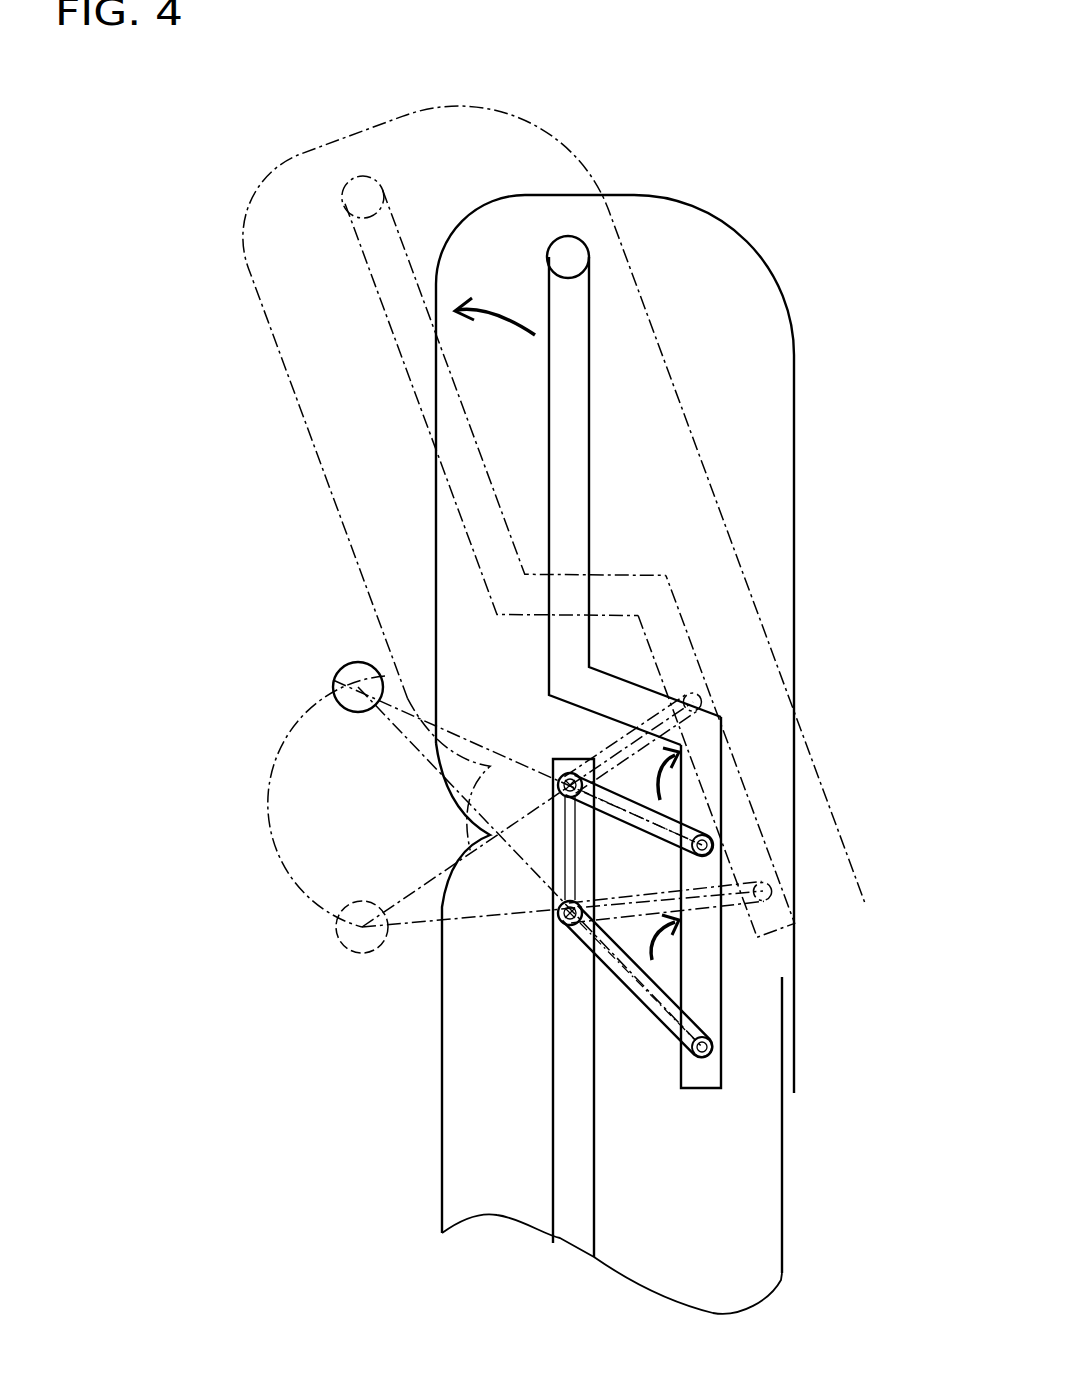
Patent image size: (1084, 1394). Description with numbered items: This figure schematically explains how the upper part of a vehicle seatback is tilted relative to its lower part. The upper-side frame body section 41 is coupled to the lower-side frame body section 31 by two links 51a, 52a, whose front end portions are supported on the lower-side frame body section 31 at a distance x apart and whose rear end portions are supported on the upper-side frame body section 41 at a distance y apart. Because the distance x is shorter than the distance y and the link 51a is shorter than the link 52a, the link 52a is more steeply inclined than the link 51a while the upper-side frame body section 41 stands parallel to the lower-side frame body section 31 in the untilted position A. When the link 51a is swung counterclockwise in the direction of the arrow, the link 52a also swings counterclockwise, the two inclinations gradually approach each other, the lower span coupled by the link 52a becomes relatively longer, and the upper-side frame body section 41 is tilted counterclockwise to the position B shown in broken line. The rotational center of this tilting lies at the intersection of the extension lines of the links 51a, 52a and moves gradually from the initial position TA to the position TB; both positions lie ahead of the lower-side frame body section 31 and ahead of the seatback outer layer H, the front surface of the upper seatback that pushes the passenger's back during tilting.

The position A is at (781, 293).
The position B is at (563, 140).
The seatback outer layer H is at (295, 392).
The lower-side frame body section 31 is at (577, 1062).
The upper-side frame body section 41 is at (573, 403).
The link 51a is at (652, 806).
The link 52a is at (633, 992).
The position TA is at (335, 672).
The position TB is at (355, 935).
The distance x X is at (492, 882).
The distance y Y is at (710, 943).